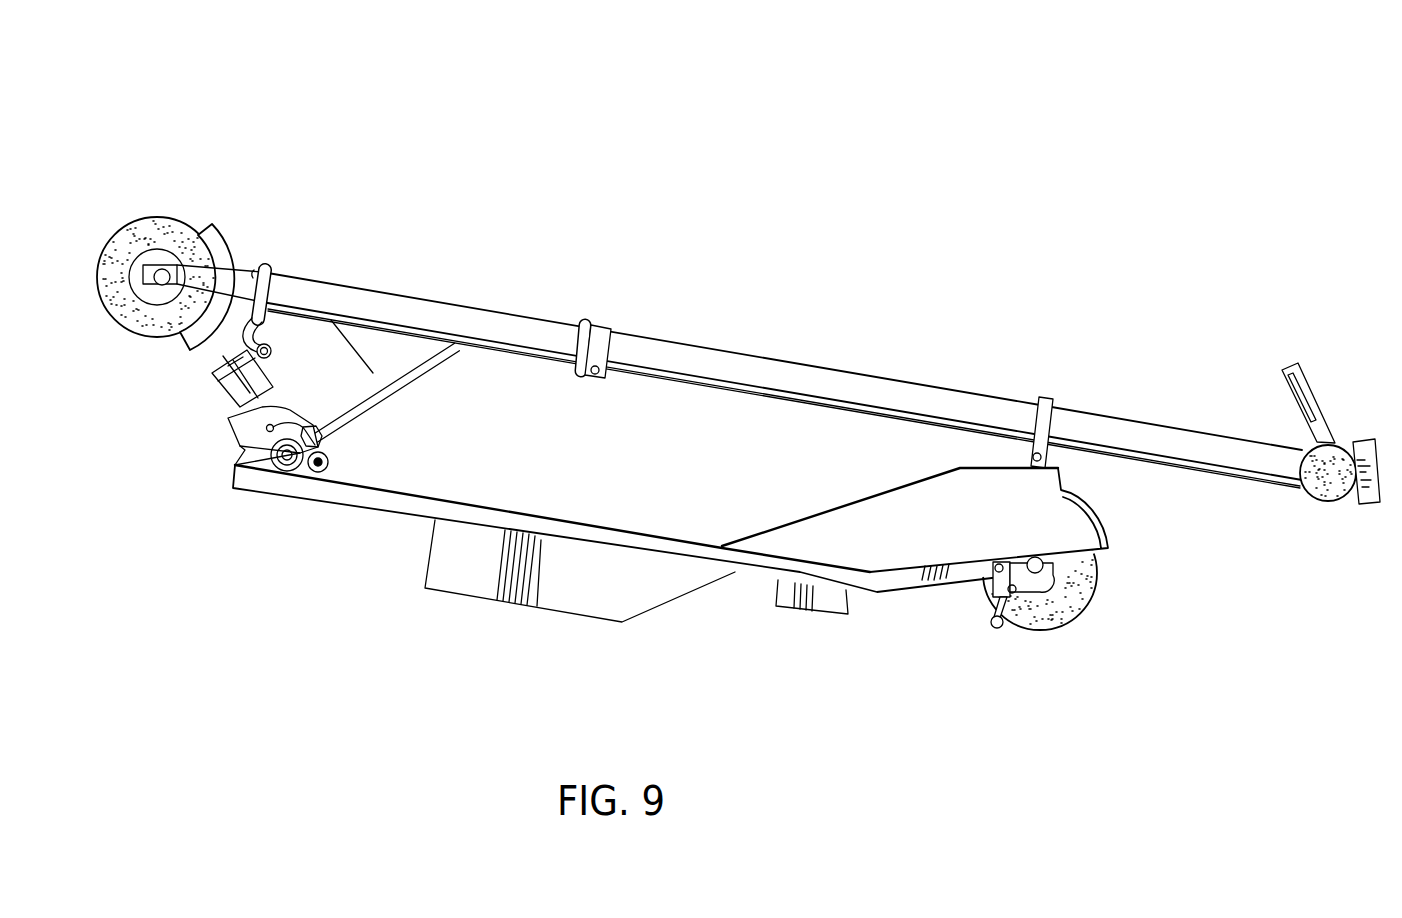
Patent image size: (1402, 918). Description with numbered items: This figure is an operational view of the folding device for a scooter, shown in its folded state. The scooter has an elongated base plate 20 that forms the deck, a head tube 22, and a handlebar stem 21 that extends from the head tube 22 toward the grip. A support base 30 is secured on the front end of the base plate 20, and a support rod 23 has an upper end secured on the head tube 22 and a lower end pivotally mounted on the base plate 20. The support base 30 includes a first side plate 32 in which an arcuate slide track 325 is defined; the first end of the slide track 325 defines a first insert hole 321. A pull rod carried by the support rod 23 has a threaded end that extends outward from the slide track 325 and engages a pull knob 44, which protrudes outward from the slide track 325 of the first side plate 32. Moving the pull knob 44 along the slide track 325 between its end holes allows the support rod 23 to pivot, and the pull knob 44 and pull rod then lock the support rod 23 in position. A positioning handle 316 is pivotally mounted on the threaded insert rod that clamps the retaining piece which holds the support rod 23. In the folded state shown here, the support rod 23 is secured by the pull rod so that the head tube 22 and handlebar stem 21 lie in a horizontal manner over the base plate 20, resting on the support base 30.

The elongated base plate 20 is at (573, 520).
The handlebar stem 21 is at (877, 376).
The head tube 22 is at (530, 322).
The support rod 23 is at (404, 388).
The support base 30 is at (223, 445).
The first side plate 32 is at (247, 442).
The positioning handle 316 is at (270, 351).
The first insert hole 321 is at (273, 452).
The arcuate slide track 325 is at (291, 469).
The pull knob 44 is at (306, 471).